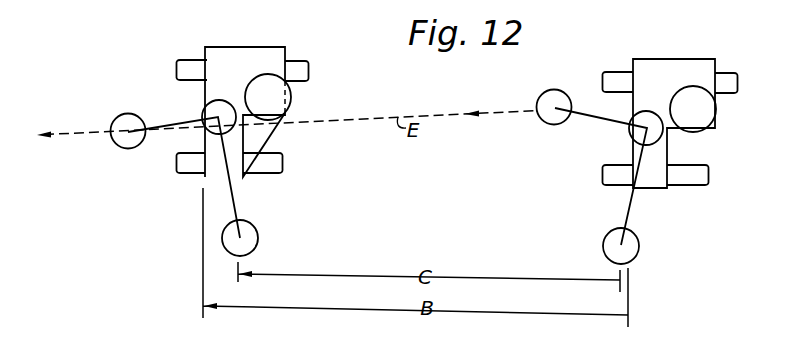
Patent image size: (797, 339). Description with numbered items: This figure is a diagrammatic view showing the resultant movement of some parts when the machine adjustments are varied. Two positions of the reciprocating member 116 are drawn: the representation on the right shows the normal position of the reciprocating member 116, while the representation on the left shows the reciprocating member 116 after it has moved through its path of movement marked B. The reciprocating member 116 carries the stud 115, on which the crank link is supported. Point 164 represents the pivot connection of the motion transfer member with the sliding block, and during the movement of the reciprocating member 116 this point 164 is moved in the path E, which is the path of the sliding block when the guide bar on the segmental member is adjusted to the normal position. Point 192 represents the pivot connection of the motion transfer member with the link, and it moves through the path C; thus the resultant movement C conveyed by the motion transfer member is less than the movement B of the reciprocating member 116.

The reciprocating member 116 is at (456, 117).
The stud 115 is at (268, 98).
The stud-like portion 164 is at (124, 140).
The stud 192 is at (258, 242).